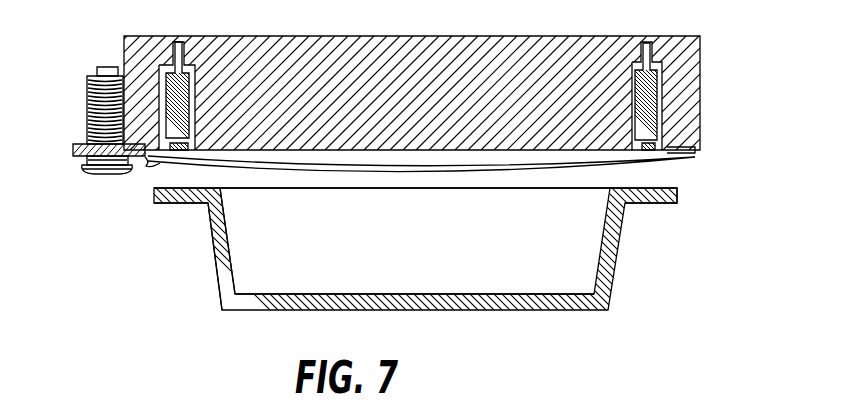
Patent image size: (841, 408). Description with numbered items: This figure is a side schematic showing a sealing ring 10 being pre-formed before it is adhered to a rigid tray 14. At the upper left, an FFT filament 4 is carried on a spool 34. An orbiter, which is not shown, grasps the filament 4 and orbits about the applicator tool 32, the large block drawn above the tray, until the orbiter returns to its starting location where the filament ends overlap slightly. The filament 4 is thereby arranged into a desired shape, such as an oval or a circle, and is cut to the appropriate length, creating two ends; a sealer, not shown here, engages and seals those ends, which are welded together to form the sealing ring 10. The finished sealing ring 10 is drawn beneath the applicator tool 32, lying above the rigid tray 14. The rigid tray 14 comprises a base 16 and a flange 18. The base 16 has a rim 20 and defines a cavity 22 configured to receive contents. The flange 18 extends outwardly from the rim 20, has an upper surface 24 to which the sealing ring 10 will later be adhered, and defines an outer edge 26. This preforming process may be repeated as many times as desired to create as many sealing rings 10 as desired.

The FFT filament 4 is at (87, 108).
The spool 34 is at (108, 66).
The applicator tool 32 is at (700, 97).
The sealing ring 10 is at (685, 163).
The upper surface 24 is at (168, 187).
The outer edge 26 is at (153, 196).
The rim 20 is at (223, 190).
The base 16 is at (215, 255).
The cavity 22 is at (428, 251).
The rigid tray 14 is at (615, 260).
The flange 18 is at (650, 203).